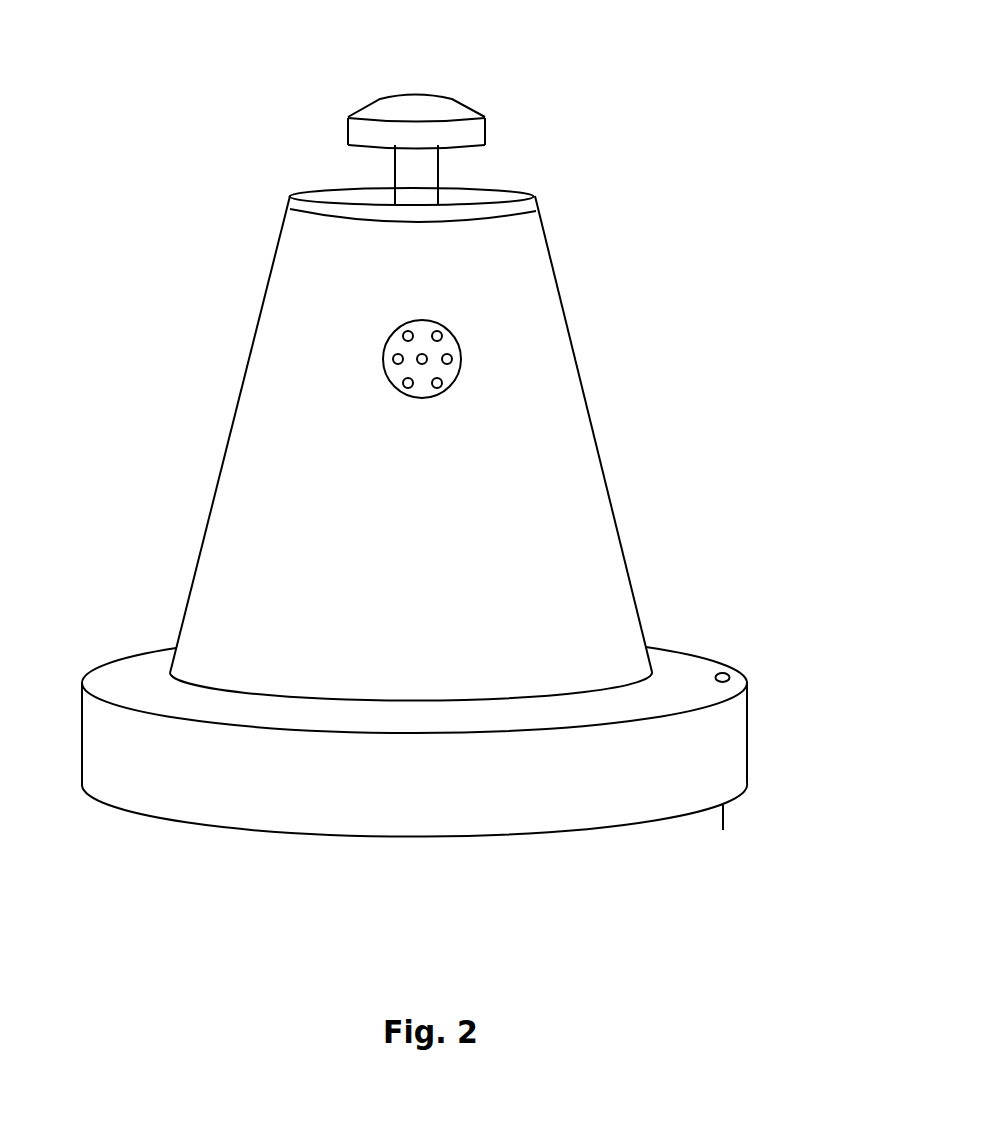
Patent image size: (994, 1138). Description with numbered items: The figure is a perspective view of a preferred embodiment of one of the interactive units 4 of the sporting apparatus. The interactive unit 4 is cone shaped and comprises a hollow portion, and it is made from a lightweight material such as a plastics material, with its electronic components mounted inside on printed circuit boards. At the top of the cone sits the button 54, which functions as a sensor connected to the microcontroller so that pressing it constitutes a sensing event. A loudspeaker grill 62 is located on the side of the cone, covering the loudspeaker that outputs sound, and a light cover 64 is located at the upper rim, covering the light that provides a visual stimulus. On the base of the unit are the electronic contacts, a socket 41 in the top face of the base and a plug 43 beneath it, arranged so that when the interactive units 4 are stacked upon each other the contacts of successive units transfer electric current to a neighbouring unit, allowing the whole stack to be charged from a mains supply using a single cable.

The interactive unit 4 is at (647, 492).
The socket 41 is at (730, 670).
The plug 43 is at (723, 830).
The button 54 is at (432, 107).
The loudspeaker grill 62 is at (455, 342).
The light cover 64 is at (552, 207).